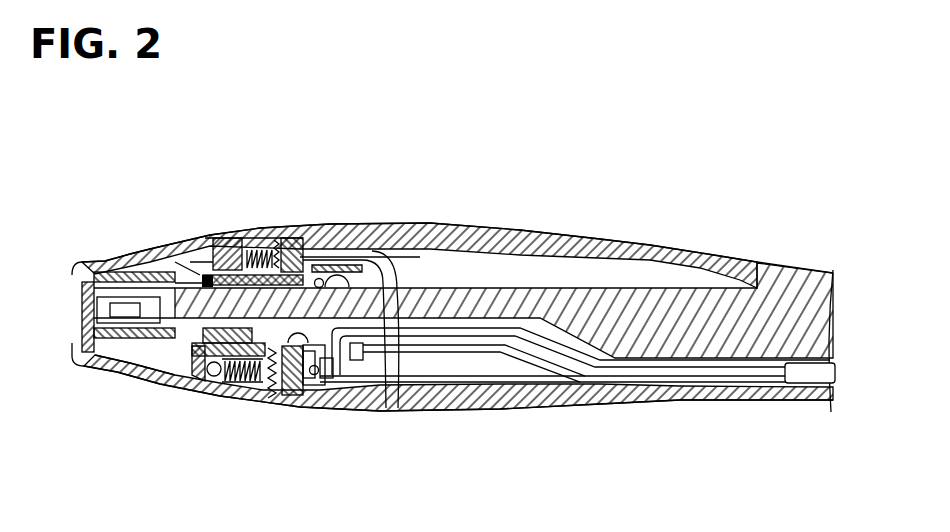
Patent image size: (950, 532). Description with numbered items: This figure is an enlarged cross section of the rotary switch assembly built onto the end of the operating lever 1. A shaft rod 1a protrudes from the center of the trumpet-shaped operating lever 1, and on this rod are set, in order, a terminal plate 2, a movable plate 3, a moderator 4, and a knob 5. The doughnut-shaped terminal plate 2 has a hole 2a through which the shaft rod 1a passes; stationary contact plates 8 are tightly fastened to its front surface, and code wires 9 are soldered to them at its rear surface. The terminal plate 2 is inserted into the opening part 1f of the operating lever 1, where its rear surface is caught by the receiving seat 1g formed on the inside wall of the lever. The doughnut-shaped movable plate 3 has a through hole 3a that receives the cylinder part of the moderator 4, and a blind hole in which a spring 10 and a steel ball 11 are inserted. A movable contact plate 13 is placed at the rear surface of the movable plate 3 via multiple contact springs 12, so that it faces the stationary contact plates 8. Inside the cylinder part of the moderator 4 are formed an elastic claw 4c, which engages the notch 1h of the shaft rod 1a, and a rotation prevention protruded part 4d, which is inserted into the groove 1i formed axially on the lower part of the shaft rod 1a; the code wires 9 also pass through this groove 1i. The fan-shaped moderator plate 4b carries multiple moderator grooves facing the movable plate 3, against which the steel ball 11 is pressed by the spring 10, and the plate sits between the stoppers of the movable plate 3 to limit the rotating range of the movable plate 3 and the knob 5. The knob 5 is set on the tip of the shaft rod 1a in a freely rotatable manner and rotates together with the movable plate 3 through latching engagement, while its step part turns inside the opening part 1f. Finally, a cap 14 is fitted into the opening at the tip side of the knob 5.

The operating lever 1 is at (604, 236).
The shaft rod 1a is at (505, 258).
The opening part 1f is at (355, 240).
The receiving seat 1g is at (380, 376).
The notch 1h is at (116, 365).
The groove 1i is at (150, 373).
The terminal plate 2 is at (325, 240).
The hole 2a is at (309, 374).
The movable plate 3 is at (194, 235).
The through hole 3a is at (290, 385).
The moderator 4 is at (153, 358).
The moderator plate 4b is at (172, 373).
The elastic claw 4c is at (210, 280).
The rotation prevention protruded part 4d is at (240, 236).
The knob 5 is at (140, 248).
The stationary contact plates 8 is at (284, 247).
The code wires 9 is at (564, 368).
The spring 10 is at (240, 372).
The steel ball 11 is at (233, 374).
The contact springs 12 is at (258, 238).
The movable contact plate 13 is at (284, 238).
The cap 14 is at (84, 310).